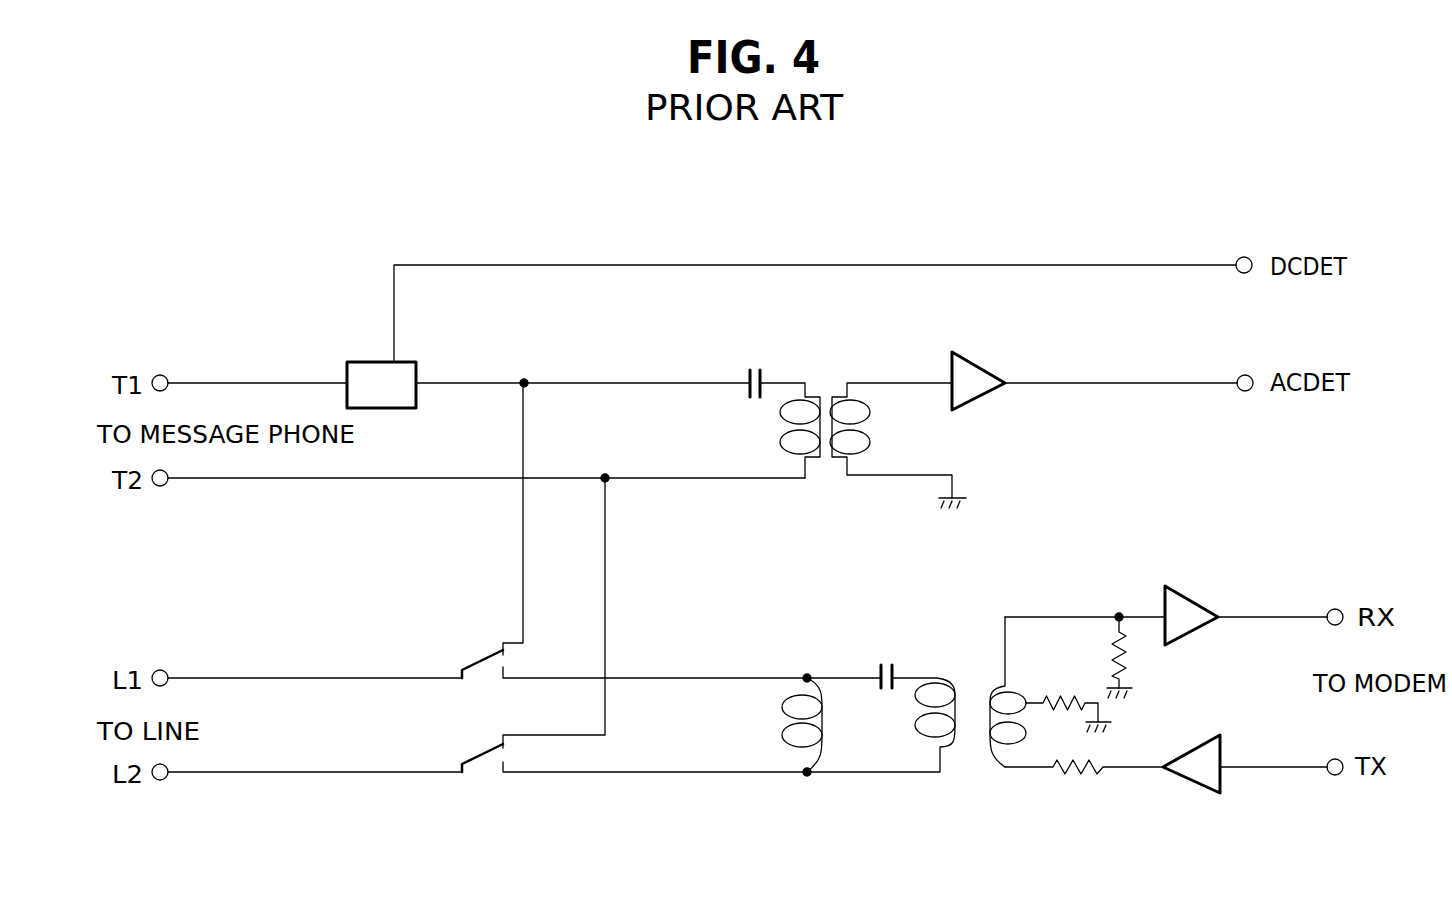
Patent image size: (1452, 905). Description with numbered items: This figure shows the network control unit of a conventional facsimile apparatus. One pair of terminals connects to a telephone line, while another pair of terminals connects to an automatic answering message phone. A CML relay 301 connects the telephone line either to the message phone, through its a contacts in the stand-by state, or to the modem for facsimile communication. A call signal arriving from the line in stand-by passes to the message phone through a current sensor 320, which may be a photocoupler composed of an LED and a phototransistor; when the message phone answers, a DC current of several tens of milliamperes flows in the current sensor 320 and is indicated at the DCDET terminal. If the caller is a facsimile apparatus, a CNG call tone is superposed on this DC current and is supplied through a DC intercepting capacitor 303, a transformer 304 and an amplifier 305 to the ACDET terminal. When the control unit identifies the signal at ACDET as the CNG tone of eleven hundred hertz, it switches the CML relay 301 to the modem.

The CML relay 301 is at (473, 790).
The DC intercepting capacitor 303 is at (758, 367).
The transformer 304 is at (829, 480).
The amplifier 305 is at (990, 365).
The current sensor 320 is at (367, 377).